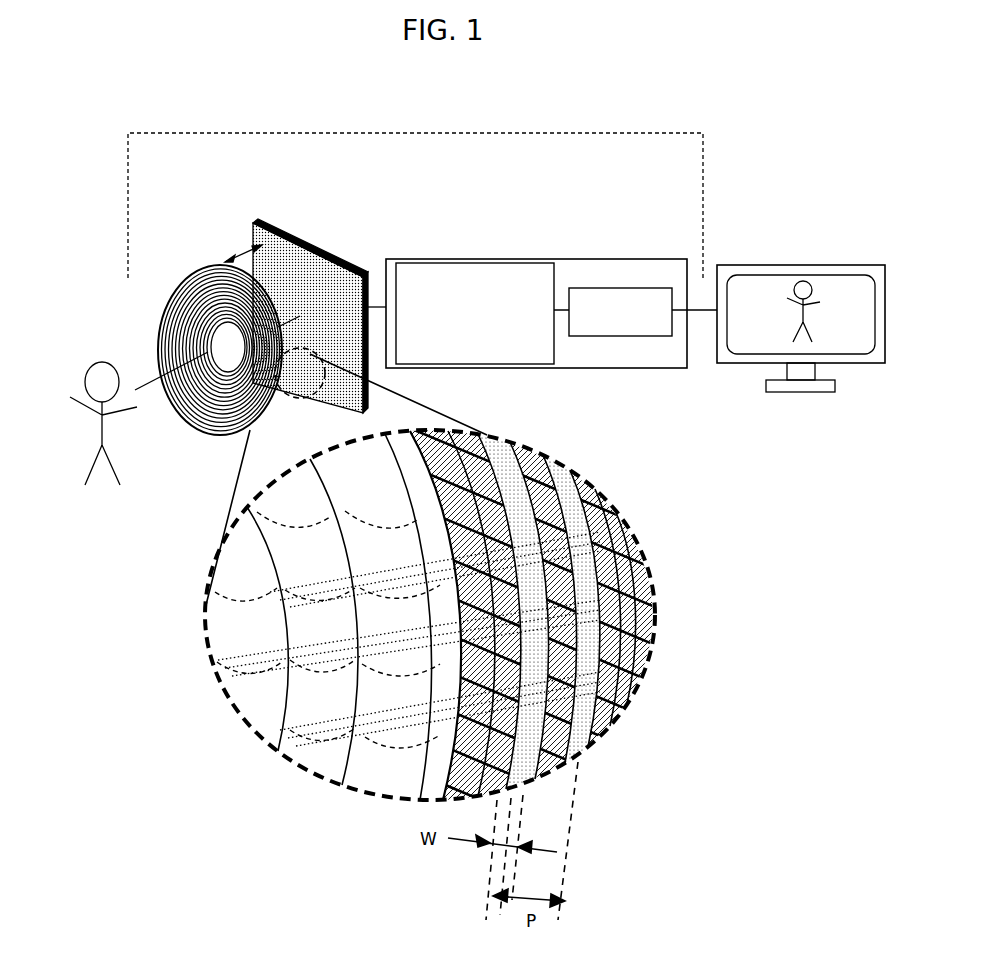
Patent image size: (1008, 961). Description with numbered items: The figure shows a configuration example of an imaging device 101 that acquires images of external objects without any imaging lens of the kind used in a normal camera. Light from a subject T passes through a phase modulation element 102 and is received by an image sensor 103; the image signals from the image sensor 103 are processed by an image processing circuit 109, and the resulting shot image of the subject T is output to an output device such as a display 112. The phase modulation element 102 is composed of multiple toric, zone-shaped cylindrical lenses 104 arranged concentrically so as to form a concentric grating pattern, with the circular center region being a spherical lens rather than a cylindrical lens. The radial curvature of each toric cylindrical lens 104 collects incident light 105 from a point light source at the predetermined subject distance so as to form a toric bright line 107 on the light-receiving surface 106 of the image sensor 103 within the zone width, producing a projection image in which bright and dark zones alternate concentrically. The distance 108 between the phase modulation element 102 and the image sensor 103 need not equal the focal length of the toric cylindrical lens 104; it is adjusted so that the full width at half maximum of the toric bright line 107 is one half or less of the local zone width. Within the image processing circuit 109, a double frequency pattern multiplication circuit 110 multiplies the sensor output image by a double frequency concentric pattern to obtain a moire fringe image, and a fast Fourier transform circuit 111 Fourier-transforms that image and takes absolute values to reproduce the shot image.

The imaging device 101 is at (448, 133).
The phase modulation element 102 is at (185, 272).
The image sensor 103 is at (280, 225).
The toric cylindrical lens 104 is at (248, 705).
The incident light 105 is at (540, 780).
The light-receiving surface 106 is at (630, 553).
The toric bright line 107 is at (497, 453).
The distance 108 is at (236, 248).
The image processing circuit 109 is at (403, 258).
The double frequency pattern multiplication circuit 110 is at (455, 270).
The fast Fourier transform circuit 111 is at (582, 288).
The display 112 is at (762, 265).
The subject T is at (93, 355).